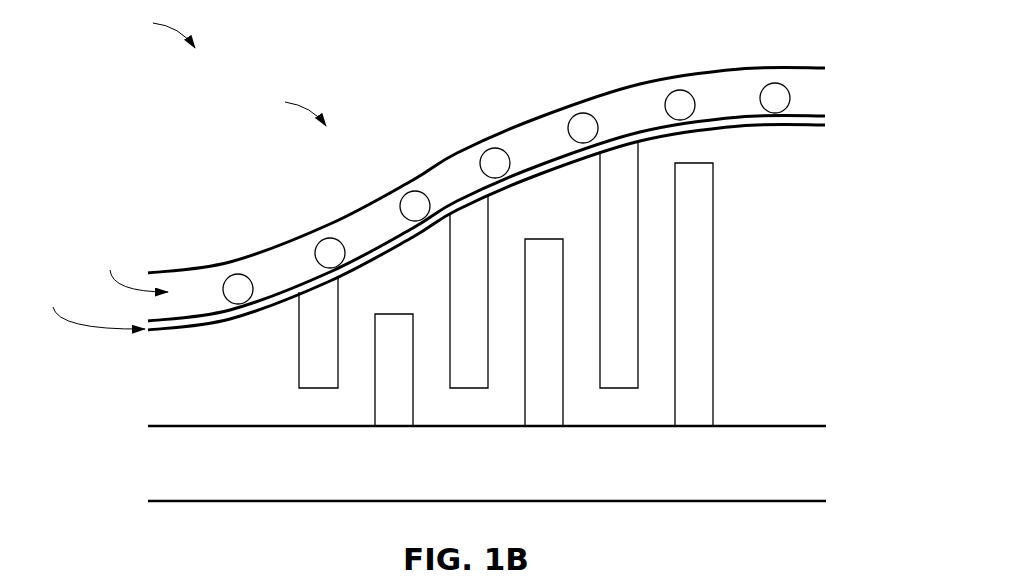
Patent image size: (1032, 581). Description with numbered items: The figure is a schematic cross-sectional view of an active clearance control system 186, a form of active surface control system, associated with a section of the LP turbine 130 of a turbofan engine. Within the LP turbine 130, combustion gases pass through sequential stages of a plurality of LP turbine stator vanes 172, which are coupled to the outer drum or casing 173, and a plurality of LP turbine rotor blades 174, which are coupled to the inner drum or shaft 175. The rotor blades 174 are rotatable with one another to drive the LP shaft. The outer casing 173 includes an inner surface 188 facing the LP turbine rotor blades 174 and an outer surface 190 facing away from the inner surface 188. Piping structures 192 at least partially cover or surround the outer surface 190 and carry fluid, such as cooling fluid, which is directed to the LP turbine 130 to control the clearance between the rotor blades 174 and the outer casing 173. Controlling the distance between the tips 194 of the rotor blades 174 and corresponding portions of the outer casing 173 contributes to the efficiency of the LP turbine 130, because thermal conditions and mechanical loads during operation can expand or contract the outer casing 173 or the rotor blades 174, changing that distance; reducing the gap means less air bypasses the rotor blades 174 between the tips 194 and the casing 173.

The active clearance control system 186 is at (154, 30).
The LP turbine 130 is at (285, 108).
The LP turbine stator vanes 172 is at (299, 337).
The LP turbine rotor blades 174 is at (413, 401).
The inner drum or shaft 175 is at (811, 423).
The inner surface 188 is at (815, 126).
The outer surface 190 is at (815, 113).
The piping structures 192 is at (133, 267).
The outer drum or casing 173 is at (93, 304).
The tips 194 is at (393, 313).